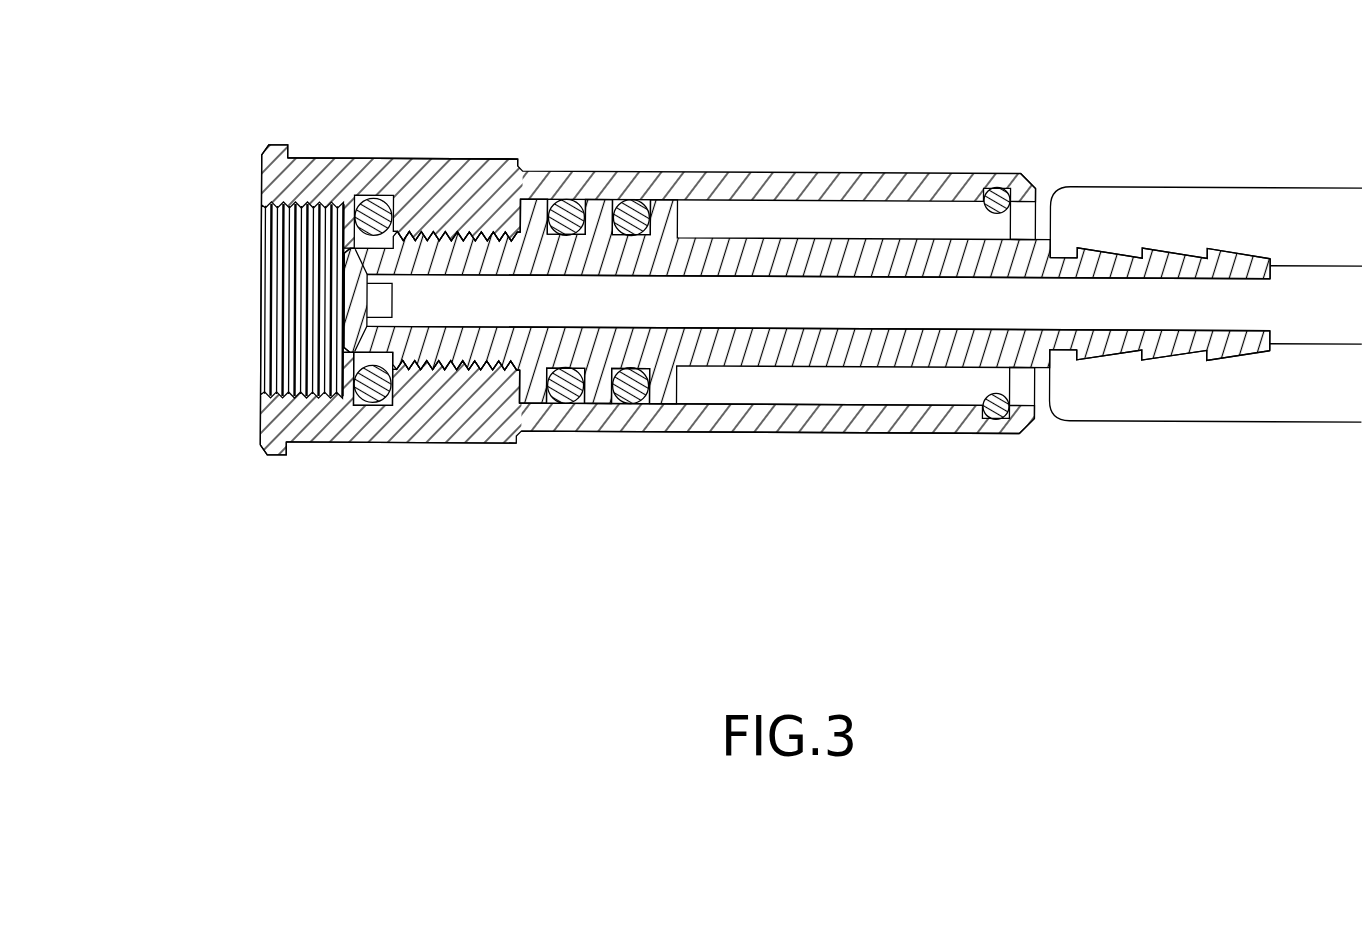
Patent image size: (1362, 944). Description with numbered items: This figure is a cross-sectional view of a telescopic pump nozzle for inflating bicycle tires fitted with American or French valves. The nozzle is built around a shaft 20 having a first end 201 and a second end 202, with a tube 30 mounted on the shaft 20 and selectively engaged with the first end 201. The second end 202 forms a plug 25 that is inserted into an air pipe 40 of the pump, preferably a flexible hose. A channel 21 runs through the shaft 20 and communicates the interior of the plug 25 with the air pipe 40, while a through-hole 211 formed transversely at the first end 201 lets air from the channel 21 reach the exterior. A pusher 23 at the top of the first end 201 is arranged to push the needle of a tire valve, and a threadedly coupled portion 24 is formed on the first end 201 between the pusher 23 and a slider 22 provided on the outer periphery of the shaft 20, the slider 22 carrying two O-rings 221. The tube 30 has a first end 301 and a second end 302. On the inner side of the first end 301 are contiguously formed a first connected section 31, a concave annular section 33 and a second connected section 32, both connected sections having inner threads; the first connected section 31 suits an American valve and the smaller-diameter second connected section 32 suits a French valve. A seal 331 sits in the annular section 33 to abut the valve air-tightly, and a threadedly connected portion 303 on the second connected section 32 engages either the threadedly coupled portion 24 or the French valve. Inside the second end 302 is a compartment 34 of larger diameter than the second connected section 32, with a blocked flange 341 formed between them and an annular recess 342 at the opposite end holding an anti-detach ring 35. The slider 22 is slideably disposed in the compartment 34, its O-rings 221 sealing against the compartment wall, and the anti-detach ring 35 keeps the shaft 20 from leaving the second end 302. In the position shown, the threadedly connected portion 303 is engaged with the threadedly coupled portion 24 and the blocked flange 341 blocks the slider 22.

The shaft 20 is at (862, 232).
The first end 201 is at (345, 240).
The second end 202 is at (1253, 240).
The channel 21 is at (812, 305).
The through-hole 211 is at (378, 300).
The slider 22 is at (600, 217).
The O-rings 221 is at (567, 217).
The pusher 23 is at (352, 272).
The threadedly coupled portion 24 is at (452, 232).
The plug 25 is at (1173, 263).
The tube 30 is at (672, 433).
The first end 301 is at (252, 470).
The second end 302 is at (1046, 458).
The threadedly connected portion 303 is at (474, 337).
The first connected section 31 is at (262, 207).
The second connected section 32 is at (405, 177).
The annular section 33 is at (340, 405).
The seal 331 is at (372, 392).
The compartment 34 is at (806, 412).
The blocked flange 341 is at (522, 388).
The recess 342 is at (1014, 420).
The anti-detach ring 35 is at (990, 405).
The air pipe 40 is at (1258, 405).